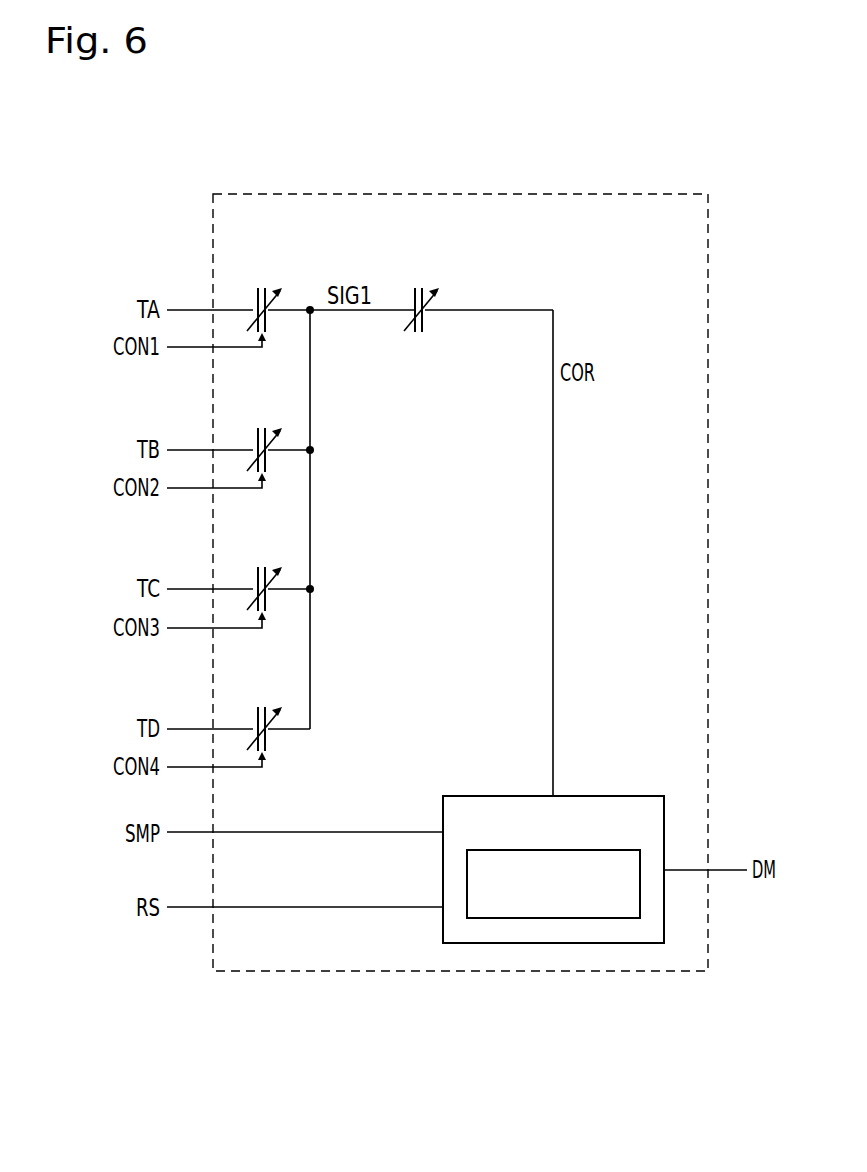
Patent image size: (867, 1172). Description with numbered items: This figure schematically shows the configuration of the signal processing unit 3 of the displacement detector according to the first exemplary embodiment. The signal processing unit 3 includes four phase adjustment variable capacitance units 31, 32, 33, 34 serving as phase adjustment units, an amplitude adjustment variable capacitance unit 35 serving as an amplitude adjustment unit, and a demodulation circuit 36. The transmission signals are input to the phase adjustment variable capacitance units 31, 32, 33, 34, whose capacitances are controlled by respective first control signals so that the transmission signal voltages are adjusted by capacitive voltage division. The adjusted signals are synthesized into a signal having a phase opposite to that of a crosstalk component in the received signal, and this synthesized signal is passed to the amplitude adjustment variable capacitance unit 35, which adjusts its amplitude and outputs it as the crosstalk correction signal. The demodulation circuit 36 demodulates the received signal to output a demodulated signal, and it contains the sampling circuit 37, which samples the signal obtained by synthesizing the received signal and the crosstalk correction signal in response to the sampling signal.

The signal processing unit 3 is at (656, 193).
The phase adjustment variable capacitance unit 31 is at (262, 285).
The phase adjustment variable capacitance unit 32 is at (262, 426).
The phase adjustment variable capacitance unit 33 is at (262, 564).
The phase adjustment variable capacitance unit 34 is at (262, 704).
The amplitude adjustment variable capacitance unit 35 is at (420, 285).
The demodulation circuit 36 is at (514, 944).
The sampling circuit 37 is at (592, 920).